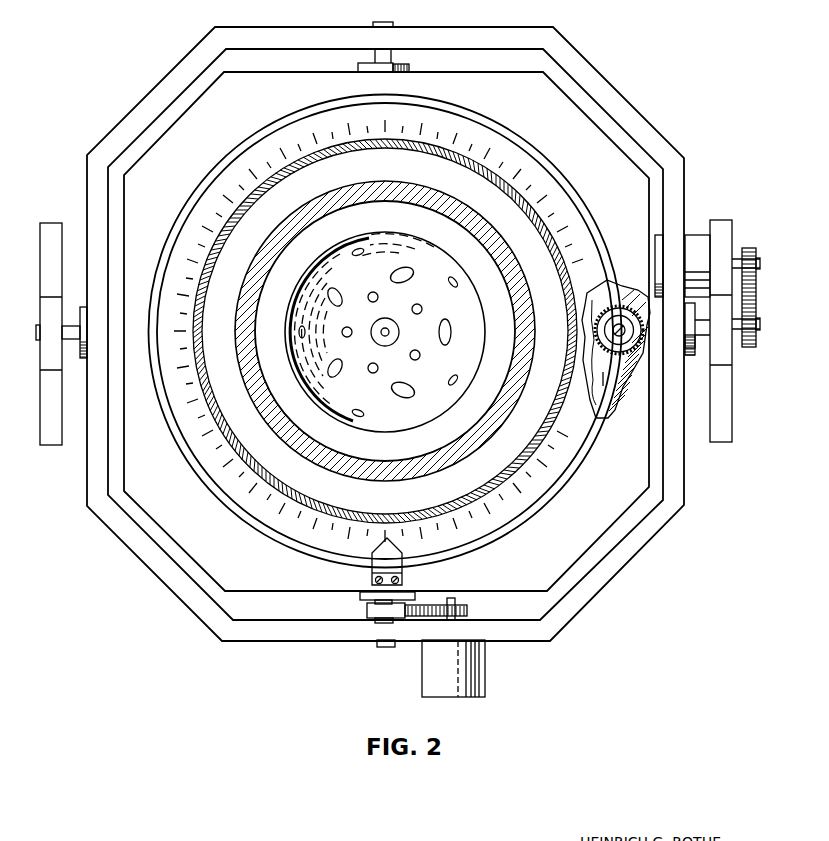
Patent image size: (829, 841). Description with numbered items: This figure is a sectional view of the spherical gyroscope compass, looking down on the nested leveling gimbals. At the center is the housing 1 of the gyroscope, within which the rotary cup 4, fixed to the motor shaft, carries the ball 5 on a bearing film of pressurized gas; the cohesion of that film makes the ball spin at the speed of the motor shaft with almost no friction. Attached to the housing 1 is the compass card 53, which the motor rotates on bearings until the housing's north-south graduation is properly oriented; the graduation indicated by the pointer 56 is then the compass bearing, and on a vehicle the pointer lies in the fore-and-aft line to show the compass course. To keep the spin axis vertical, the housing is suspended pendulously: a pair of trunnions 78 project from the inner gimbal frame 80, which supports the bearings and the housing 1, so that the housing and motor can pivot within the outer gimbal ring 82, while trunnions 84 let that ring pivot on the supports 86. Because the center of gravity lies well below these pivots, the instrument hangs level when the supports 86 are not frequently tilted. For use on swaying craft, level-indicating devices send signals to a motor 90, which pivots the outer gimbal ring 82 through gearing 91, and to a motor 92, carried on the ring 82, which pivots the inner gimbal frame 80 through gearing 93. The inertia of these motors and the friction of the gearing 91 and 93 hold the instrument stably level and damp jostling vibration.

The housing 1 is at (385, 331).
The rotary cup 4 is at (278, 310).
The ball 5 is at (423, 342).
The compass card 53 is at (246, 505).
The pointer 56 is at (393, 560).
The trunnions 78 is at (385, 22).
The inner gimbal frame 80 is at (591, 137).
The gimbal ring 82 is at (573, 603).
The trunnions 84 is at (704, 342).
The supports 86 is at (726, 441).
The motor 90 is at (692, 250).
The gearing 91 is at (752, 292).
The motor 92 is at (462, 698).
The gearing 93 is at (441, 600).